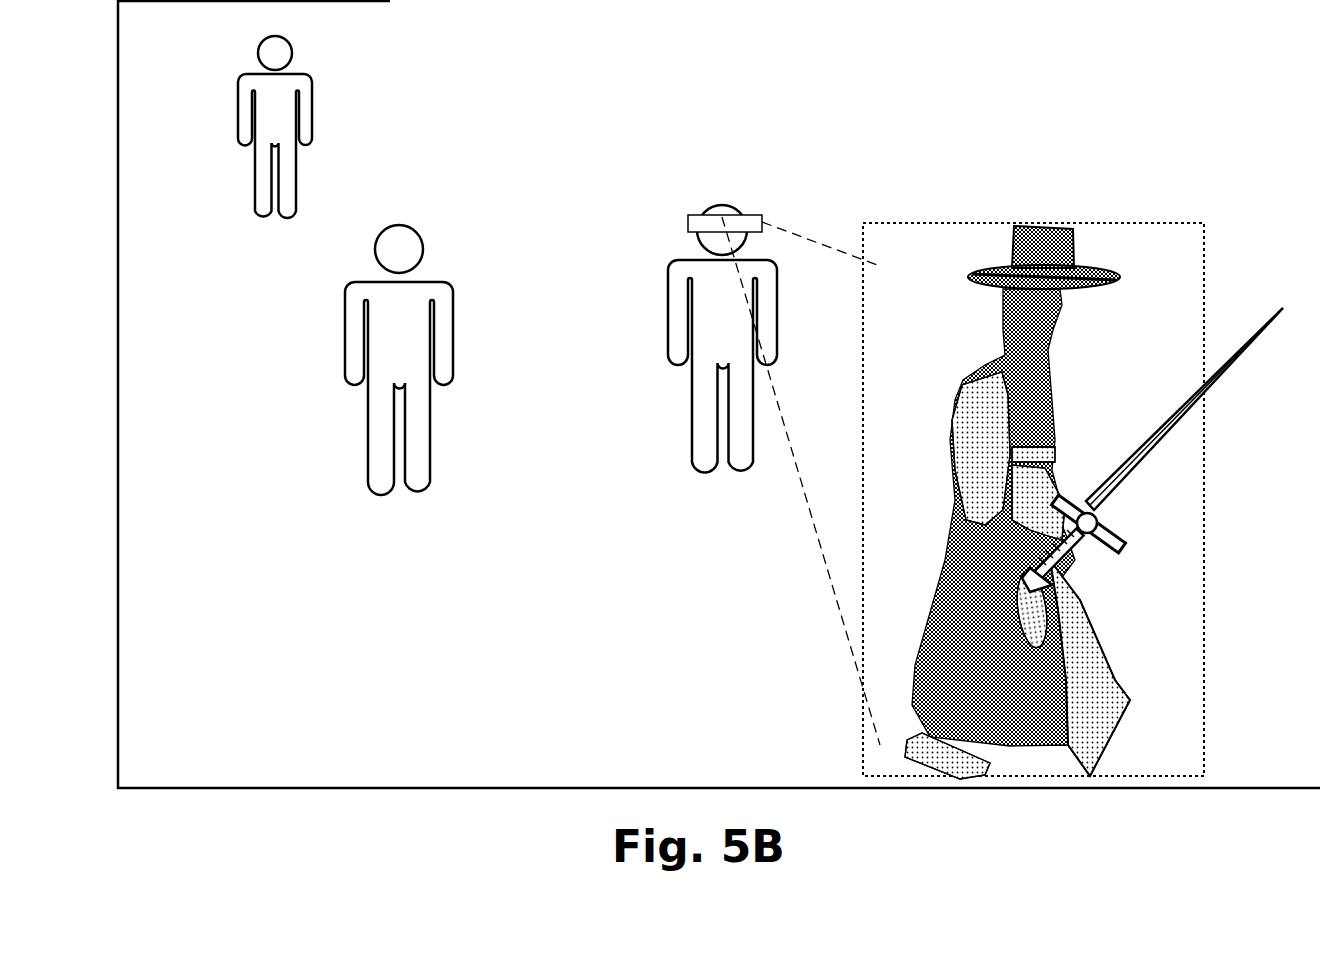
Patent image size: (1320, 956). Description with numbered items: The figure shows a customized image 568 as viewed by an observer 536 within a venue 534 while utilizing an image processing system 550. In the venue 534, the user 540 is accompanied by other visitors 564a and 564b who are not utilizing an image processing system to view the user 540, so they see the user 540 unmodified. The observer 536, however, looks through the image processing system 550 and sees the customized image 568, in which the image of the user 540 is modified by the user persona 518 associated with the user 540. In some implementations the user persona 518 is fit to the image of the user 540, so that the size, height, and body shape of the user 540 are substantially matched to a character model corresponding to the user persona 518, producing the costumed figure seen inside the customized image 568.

The venue 534 is at (307, 706).
The other visitor 564b is at (252, 186).
The other visitor 564a is at (365, 422).
The observer 536 is at (690, 412).
The image processing system 550 is at (697, 213).
The customized image 568 is at (998, 222).
The user 540 is at (1094, 502).
The user persona 518 is at (1053, 771).